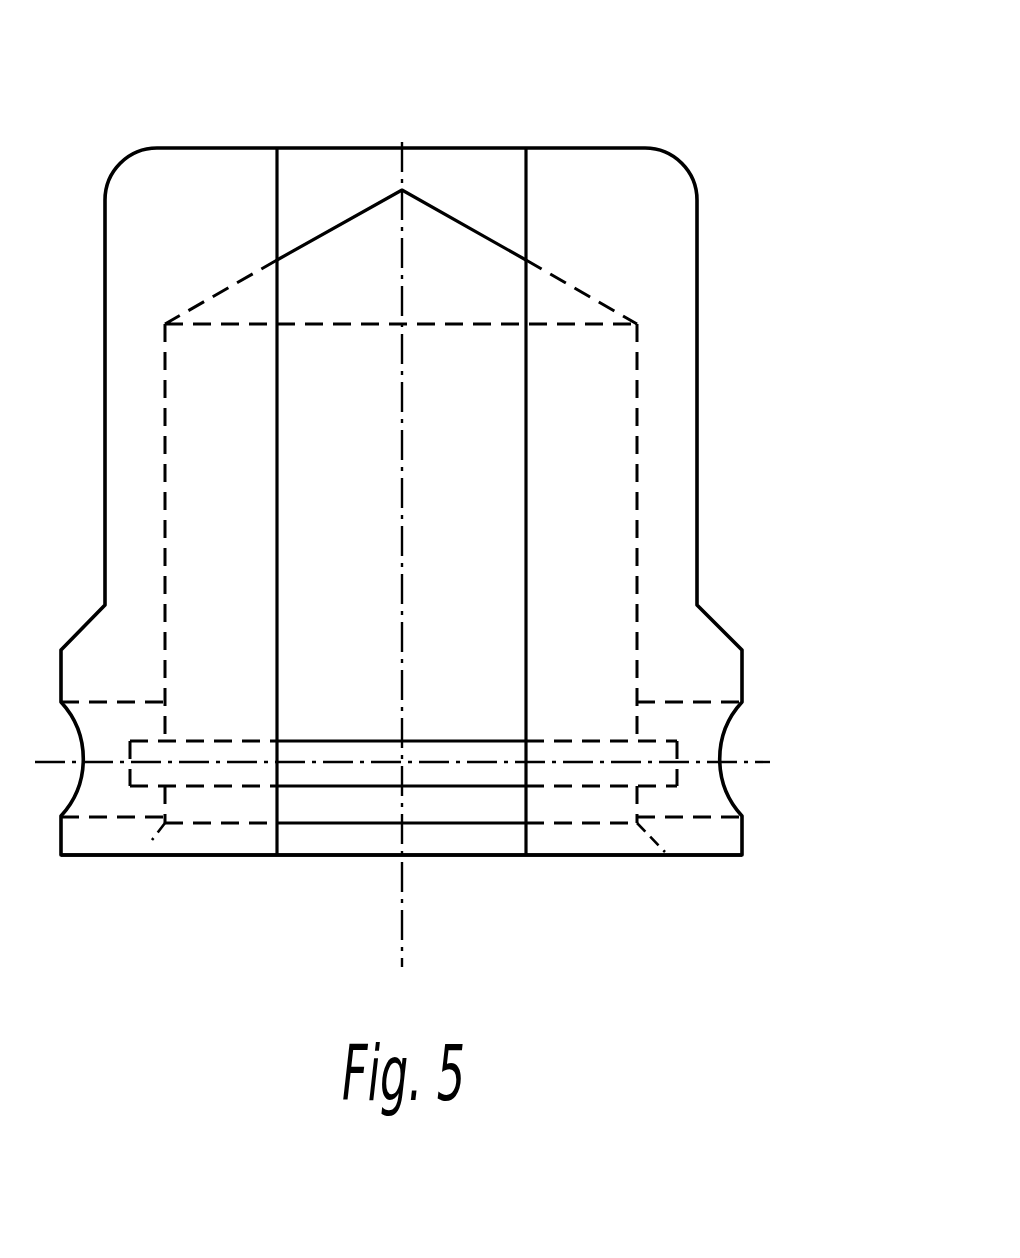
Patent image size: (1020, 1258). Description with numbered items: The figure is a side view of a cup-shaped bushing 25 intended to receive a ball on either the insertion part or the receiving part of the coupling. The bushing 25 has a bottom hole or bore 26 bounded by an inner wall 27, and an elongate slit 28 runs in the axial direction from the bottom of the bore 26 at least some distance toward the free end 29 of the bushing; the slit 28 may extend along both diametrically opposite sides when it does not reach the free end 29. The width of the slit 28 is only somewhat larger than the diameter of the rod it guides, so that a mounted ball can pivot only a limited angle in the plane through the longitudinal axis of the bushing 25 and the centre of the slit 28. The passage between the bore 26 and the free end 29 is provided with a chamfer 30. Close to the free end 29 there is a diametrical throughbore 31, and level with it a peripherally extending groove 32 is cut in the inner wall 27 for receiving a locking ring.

The bushing 25 is at (703, 118).
The bore 26 is at (580, 453).
The inner wall 27 is at (640, 365).
The slit 28 is at (462, 583).
The free end 29 is at (542, 857).
The chamfer 30 is at (135, 855).
The throughbore 31 is at (705, 728).
The groove 32 is at (718, 780).